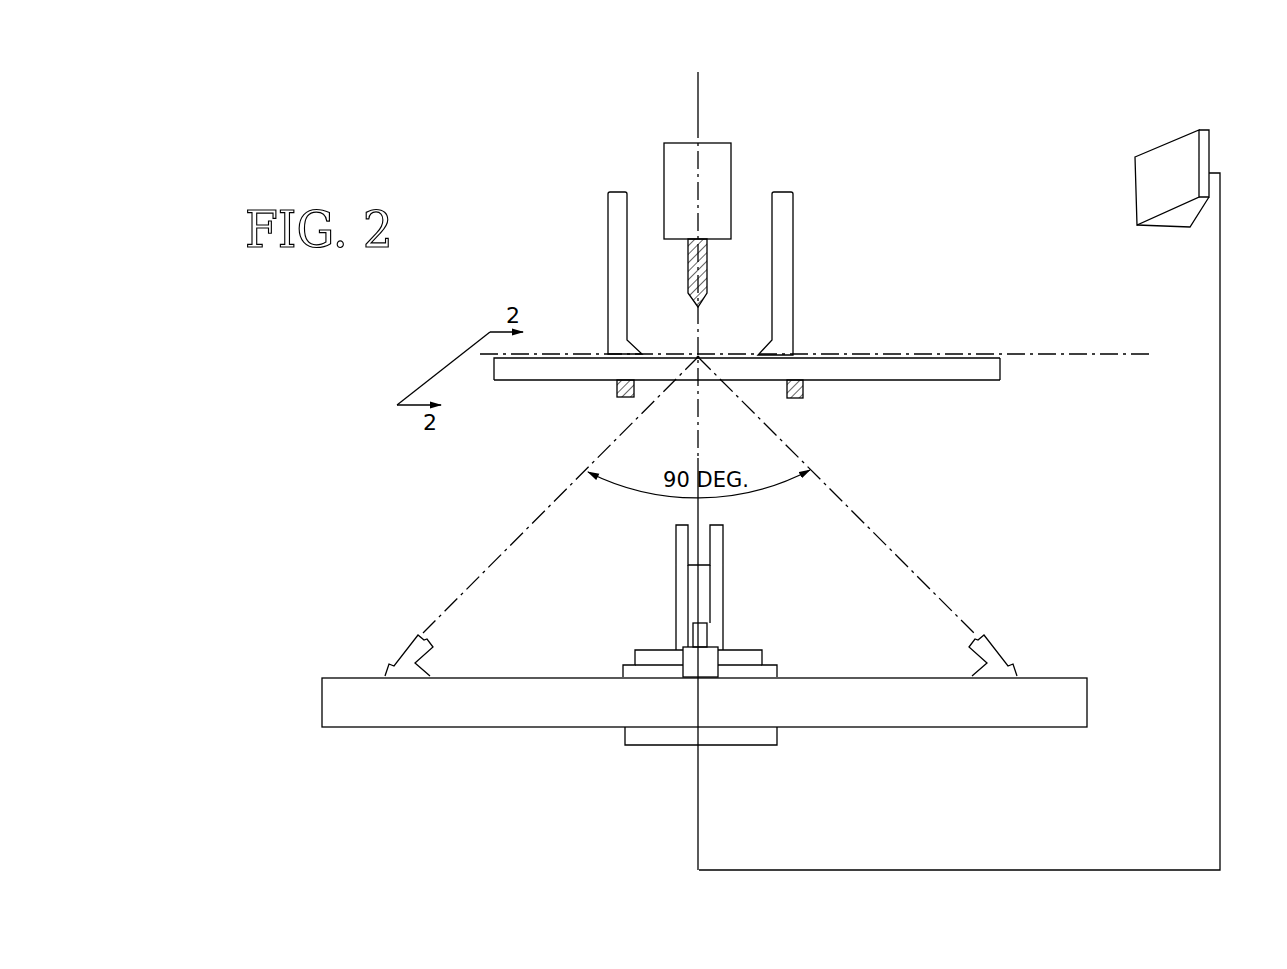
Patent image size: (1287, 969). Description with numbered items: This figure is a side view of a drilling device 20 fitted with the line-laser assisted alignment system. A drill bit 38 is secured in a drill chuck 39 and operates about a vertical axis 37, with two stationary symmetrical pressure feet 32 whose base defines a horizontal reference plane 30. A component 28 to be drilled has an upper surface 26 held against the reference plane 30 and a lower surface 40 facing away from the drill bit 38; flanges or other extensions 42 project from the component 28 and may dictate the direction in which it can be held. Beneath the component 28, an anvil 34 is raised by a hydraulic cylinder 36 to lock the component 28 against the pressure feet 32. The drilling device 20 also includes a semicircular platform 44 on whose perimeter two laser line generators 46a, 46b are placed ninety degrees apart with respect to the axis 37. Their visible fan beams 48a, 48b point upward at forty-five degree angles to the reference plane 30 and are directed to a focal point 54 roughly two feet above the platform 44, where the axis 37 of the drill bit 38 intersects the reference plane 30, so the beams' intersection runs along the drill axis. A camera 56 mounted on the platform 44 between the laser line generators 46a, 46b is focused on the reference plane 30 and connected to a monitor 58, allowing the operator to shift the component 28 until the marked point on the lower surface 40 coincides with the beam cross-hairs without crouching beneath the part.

The drilling device 20 is at (807, 108).
The upper surface 26 is at (963, 358).
The component 28 is at (1003, 370).
The reference plane 30 is at (1138, 352).
The pressure feet 32 is at (606, 248).
The anvil 34 is at (727, 550).
The hydraulic cylinder 36 is at (757, 645).
The axis 37 is at (702, 97).
The drill bit 38 is at (709, 275).
The drill chuck 39 is at (733, 178).
The lower surface 40 is at (970, 380).
The flanges or other extensions 42 is at (617, 394).
The platform 44 is at (1090, 700).
The laser line generator 46a is at (1003, 640).
The laser line generator 46b is at (400, 648).
The fan beam 48a is at (912, 563).
The fan beam 48b is at (498, 560).
The focal point 54 is at (701, 355).
The camera 56 is at (688, 633).
The monitor 58 is at (1205, 152).